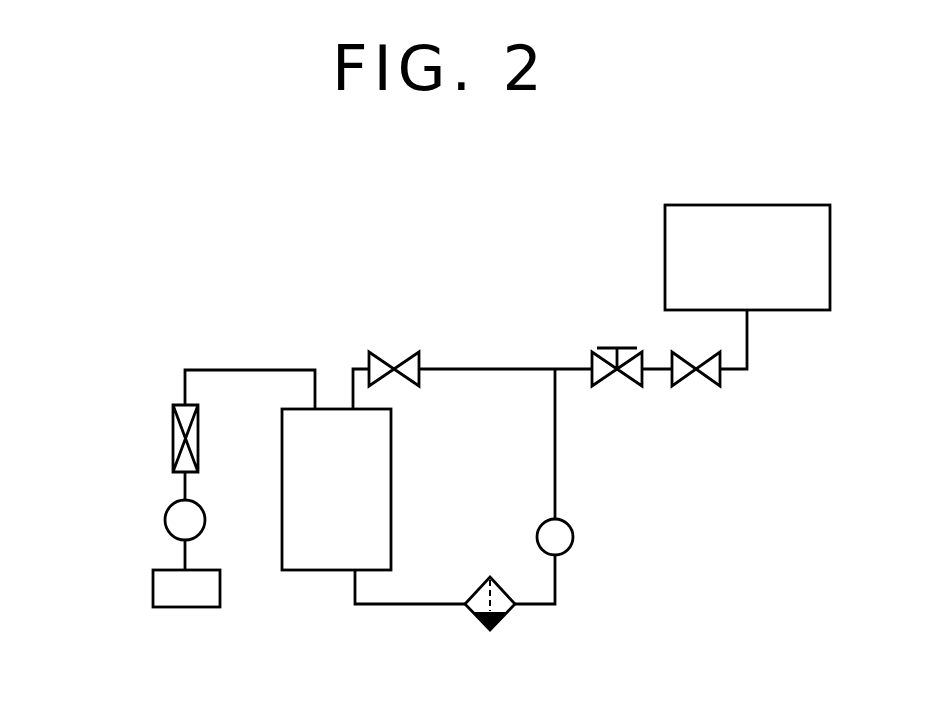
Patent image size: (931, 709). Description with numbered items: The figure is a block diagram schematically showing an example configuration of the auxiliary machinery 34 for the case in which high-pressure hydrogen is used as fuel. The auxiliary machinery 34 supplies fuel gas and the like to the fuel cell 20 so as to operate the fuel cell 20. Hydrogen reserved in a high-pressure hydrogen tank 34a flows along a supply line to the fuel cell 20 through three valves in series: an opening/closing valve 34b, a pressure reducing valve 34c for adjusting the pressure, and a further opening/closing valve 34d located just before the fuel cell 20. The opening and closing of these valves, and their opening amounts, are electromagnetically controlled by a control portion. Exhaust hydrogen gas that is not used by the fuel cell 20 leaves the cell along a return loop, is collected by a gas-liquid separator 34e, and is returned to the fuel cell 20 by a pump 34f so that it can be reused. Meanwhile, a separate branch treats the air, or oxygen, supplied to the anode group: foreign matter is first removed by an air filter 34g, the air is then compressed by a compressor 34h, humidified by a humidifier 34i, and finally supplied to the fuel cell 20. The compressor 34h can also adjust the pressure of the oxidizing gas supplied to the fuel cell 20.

The auxiliary machinery 34 is at (594, 205).
The high-pressure hydrogen tank 34a is at (778, 205).
The opening/closing valve 34b is at (705, 386).
The pressure reducing valve 34c is at (628, 386).
The opening/closing valve 34d is at (417, 354).
The gas-liquid separator 34e is at (505, 615).
The pump 34f is at (573, 537).
The air filter 34g is at (153, 590).
The compressor 34h is at (165, 521).
The humidifier 34i is at (173, 433).
The fuel cell 20 is at (391, 488).